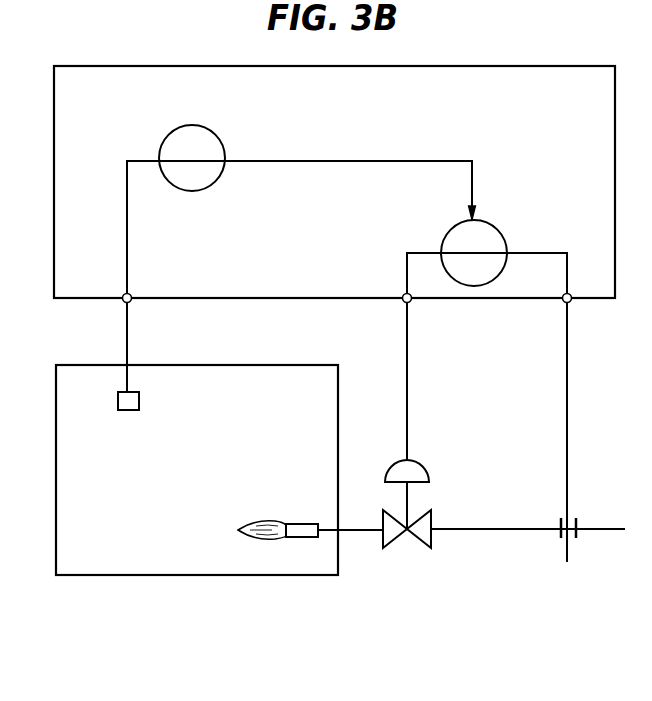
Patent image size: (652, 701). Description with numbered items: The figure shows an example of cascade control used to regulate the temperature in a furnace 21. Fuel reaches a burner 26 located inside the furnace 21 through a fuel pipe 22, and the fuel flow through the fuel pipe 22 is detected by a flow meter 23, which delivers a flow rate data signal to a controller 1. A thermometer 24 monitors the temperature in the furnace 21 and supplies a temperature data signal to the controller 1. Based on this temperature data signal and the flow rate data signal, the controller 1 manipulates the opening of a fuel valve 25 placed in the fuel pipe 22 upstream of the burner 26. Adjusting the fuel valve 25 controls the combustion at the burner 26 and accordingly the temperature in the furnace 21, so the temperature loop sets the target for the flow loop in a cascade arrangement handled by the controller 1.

The controller 1 is at (522, 66).
The furnace 21 is at (220, 575).
The fuel pipe 22 is at (496, 529).
The flow meter 23 is at (579, 535).
The thermometer 24 is at (139, 400).
The fuel valve 25 is at (395, 545).
The burner 26 is at (298, 537).